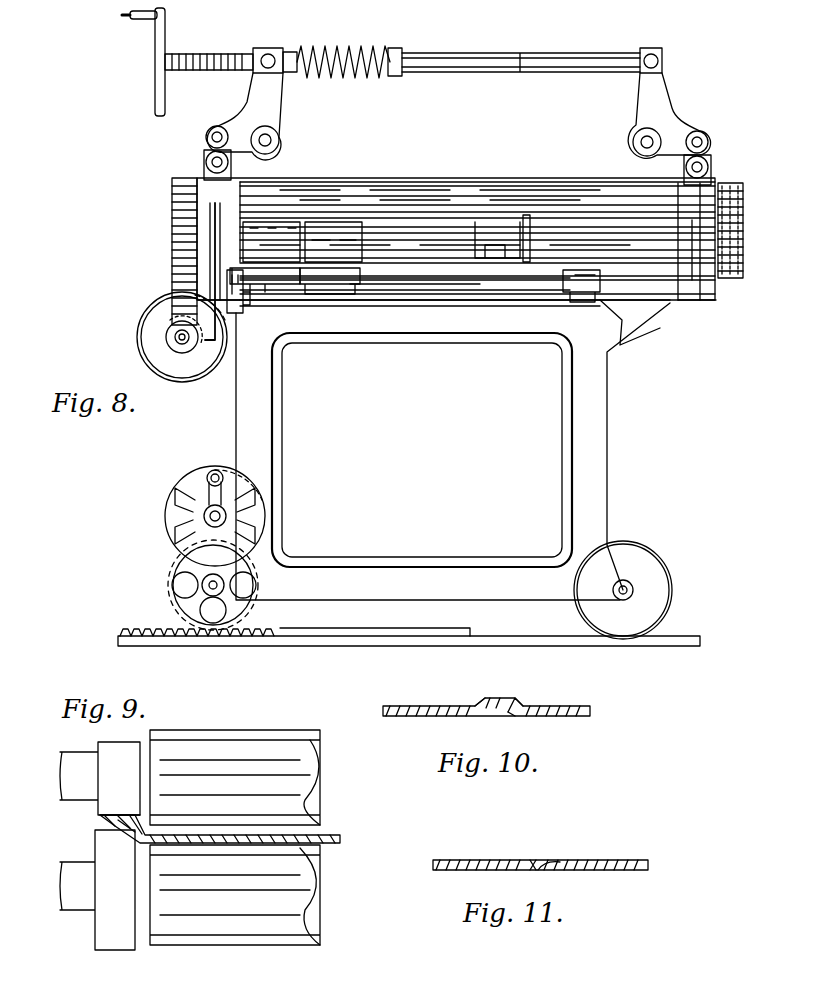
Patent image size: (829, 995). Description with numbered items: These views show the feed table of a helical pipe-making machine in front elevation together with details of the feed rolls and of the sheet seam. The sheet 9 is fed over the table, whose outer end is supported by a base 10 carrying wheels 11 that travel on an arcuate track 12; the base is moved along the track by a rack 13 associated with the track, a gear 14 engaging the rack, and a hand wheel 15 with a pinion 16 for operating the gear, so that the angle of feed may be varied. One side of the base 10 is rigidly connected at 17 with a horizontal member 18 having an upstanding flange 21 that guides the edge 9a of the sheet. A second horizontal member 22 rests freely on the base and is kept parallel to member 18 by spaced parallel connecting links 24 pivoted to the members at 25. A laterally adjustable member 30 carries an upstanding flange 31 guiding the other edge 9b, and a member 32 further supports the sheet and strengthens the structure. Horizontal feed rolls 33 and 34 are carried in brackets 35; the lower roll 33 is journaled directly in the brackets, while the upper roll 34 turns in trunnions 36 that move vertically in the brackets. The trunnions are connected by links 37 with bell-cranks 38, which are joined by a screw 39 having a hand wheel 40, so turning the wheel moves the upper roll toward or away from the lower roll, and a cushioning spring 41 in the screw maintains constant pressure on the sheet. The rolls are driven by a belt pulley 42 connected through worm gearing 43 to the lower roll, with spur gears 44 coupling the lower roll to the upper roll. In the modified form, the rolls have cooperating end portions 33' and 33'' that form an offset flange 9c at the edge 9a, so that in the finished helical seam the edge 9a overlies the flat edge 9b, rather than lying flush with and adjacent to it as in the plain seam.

In FIG. 9, the sheet 9 is at (339, 835).
In FIG. 10, the sheet 9 is at (395, 704).
In FIG. 11, the sheet 9 is at (448, 846).
In FIG. 9, the edge of the sheet 9a is at (98, 820).
In FIG. 10, the edge of the sheet 9a is at (478, 702).
In FIG. 11, the edge of the sheet 9a is at (550, 866).
In FIG. 10, the edge of the sheet 9b is at (514, 717).
In FIG. 11, the edge of the sheet 9b is at (530, 858).
In FIG. 9, the offset flange 9c is at (120, 831).
In FIG. 10, the offset flange 9c is at (512, 702).
In FIG. 8, the base 10 is at (598, 413).
In FIG. 8, the wheels 11 is at (664, 566).
In FIG. 8, the arcuate track 12 is at (548, 618).
In FIG. 8, the rack 13 is at (120, 636).
In FIG. 8, the gear 14 is at (172, 612).
In FIG. 8, the hand wheel 15 is at (190, 480).
In FIG. 8, the pinion 16 is at (194, 515).
In FIG. 8, the rigid connection 17 is at (280, 294).
In FIG. 8, the horizontal member 18 is at (292, 224).
In FIG. 8, the upstanding flange 21 is at (246, 224).
In FIG. 8, the second horizontal member 22 is at (610, 300).
In FIG. 8, the connecting links 24 is at (488, 296).
In FIG. 8, the pivotal connections 25 is at (236, 313).
In FIG. 8, the laterally adjustable member 30 is at (518, 208).
In FIG. 8, the upstanding flange 31 is at (532, 215).
In FIG. 8, the member 32 is at (350, 265).
In FIG. 8, the lower feed roll 33 is at (477, 198).
In FIG. 9, the lower feed roll 33 is at (252, 895).
In FIG. 9, the cooperating portion of lower feed roll 33' is at (87, 890).
In FIG. 9, the cooperating portion of upper feed roll 33'' is at (94, 772).
In FIG. 8, the upper feed roll 34 is at (400, 182).
In FIG. 9, the upper feed roll 34 is at (300, 778).
In FIG. 8, the brackets 35 is at (245, 138).
In FIG. 8, the trunnions 36 is at (194, 173).
In FIG. 8, the links 37 is at (212, 147).
In FIG. 8, the bell-cranks 38 is at (258, 97).
In FIG. 8, the screw 39 is at (237, 54).
In FIG. 8, the hand wheel 40 is at (152, 46).
In FIG. 8, the cushioning spring 41 is at (388, 46).
In FIG. 8, the belt pulley 42 is at (140, 337).
In FIG. 8, the worm gearing 43 is at (158, 292).
In FIG. 8, the spur gears 44 is at (745, 212).